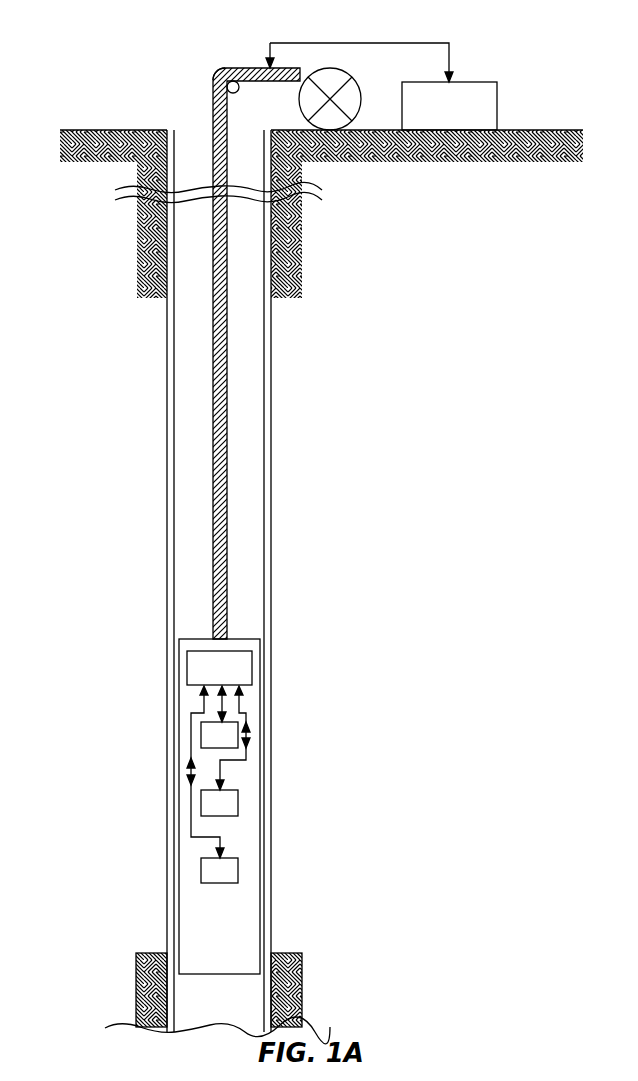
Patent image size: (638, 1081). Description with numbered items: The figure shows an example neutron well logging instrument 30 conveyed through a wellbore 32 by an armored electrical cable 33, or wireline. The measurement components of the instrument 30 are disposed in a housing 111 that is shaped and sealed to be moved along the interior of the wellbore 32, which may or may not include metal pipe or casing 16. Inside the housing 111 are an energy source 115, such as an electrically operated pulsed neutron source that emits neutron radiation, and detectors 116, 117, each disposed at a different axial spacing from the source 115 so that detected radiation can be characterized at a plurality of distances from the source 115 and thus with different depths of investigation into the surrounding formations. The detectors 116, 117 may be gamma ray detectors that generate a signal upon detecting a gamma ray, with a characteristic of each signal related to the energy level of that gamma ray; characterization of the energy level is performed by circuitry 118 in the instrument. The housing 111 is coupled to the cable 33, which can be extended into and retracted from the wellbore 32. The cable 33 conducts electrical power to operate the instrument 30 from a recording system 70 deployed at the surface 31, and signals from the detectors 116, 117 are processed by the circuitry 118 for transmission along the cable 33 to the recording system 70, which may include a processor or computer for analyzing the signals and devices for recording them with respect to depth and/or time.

The casing 16 is at (168, 530).
The neutron well logging instrument 30 is at (196, 630).
The surface 31 is at (106, 128).
The wellbore 32 is at (196, 140).
The armored electrical cable 33 is at (224, 78).
The recording system 70 is at (483, 93).
The housing 111 is at (174, 912).
The energy source 115 is at (233, 870).
The detector 116 is at (233, 798).
The detector 117 is at (208, 740).
The circuitry 118 is at (233, 672).